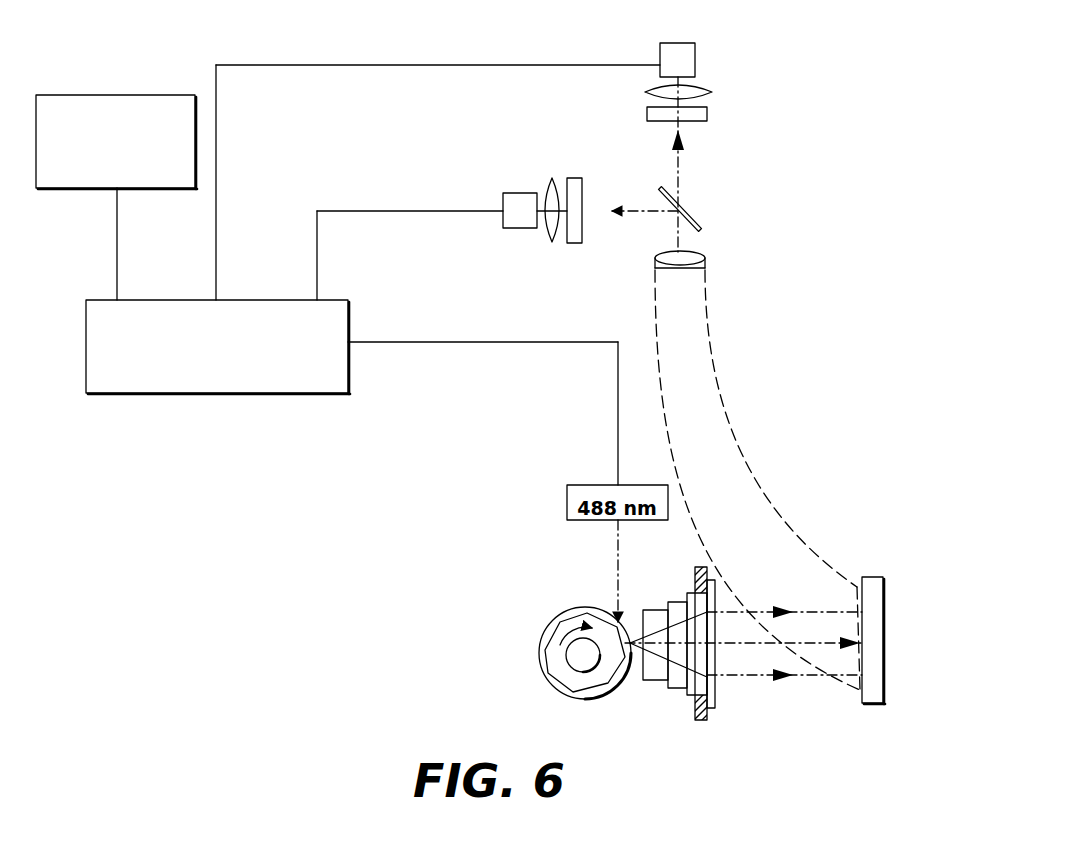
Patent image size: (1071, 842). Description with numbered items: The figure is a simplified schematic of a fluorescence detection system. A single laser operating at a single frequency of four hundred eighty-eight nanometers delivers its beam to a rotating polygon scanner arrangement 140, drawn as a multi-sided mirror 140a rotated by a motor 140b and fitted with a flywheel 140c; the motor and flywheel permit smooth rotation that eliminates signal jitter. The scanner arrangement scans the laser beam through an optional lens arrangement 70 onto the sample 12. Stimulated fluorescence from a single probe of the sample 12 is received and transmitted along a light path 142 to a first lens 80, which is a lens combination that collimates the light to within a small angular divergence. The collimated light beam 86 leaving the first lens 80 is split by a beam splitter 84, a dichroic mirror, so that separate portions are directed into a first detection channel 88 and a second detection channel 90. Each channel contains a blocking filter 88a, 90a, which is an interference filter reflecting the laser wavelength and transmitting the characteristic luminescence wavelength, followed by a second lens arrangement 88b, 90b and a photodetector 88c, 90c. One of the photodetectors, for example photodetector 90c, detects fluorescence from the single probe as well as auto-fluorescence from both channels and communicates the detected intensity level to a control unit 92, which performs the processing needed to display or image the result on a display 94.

The sample 12 is at (875, 577).
The lens arrangement 70 is at (678, 580).
The first lens 80 is at (700, 257).
The beam splitter 84 is at (695, 222).
The collimated light beam 86 is at (673, 218).
The first detection channel 88 is at (657, 32).
The blocking filter 88a is at (700, 120).
The second lens arrangement 88b is at (705, 93).
The photodetector 88c is at (681, 43).
The second detection channel 90 is at (505, 160).
The blocking filter 90a is at (583, 196).
The second lens arrangement 90b is at (552, 190).
The photodetector 90c is at (515, 195).
The control unit 92 is at (168, 393).
The display 94 is at (136, 95).
The rotating polygon scanner arrangement 140 is at (468, 648).
The multi-sided mirror 140a is at (560, 638).
The motor 140b is at (582, 665).
The flywheel 140c is at (565, 612).
The light path 142 is at (727, 410).